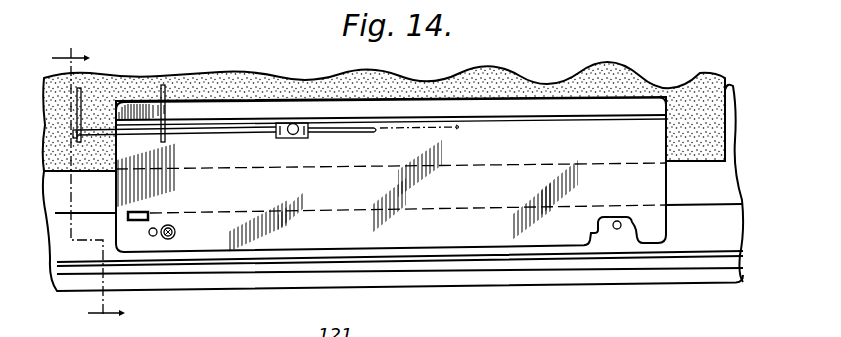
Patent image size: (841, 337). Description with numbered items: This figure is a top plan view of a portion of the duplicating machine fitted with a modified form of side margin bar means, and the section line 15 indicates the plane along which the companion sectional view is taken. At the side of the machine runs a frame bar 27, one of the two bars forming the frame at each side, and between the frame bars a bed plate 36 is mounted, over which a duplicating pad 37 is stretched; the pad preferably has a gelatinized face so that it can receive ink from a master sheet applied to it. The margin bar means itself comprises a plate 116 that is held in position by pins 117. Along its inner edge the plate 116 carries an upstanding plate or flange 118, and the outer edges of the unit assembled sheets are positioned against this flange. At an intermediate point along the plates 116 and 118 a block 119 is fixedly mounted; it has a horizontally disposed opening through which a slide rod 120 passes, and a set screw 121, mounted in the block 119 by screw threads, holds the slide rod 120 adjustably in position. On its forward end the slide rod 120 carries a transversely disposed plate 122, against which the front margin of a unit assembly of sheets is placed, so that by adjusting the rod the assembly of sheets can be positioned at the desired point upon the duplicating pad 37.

The section line 15- 15 is at (88, 185).
The frame bar 27 is at (727, 229).
The bed plate 36 is at (733, 112).
The duplicating pad 37 is at (255, 84).
The plate 116 is at (375, 240).
The pins 117 is at (176, 233).
The upstanding plate or flange 118 is at (517, 121).
The block 119 is at (302, 136).
The slide rod 120 is at (195, 137).
The set screw 121 is at (292, 133).
The transversely disposed plate 122 is at (81, 96).